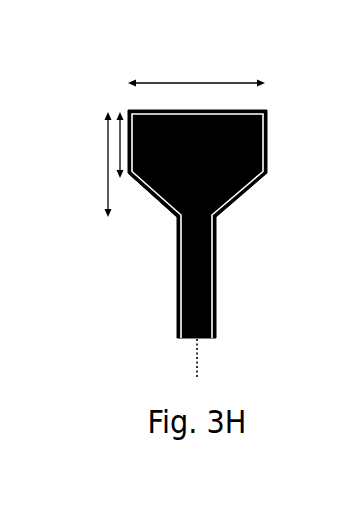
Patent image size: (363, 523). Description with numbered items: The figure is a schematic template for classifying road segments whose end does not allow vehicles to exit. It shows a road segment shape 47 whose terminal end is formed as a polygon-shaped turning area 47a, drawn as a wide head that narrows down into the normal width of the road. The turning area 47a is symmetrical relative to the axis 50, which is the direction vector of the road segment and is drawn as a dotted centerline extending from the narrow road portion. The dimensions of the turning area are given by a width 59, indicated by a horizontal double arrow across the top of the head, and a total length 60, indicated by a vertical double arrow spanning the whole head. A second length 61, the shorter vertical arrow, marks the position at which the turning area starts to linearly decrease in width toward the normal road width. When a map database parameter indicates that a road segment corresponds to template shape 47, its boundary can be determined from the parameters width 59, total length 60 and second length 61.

The road segment shape 47 is at (289, 114).
The polygon-shaped turning area 47a is at (157, 198).
The direction vector / axis 50 is at (192, 360).
The width 59 is at (192, 83).
The total length 60 is at (108, 192).
The second length 61 is at (120, 142).